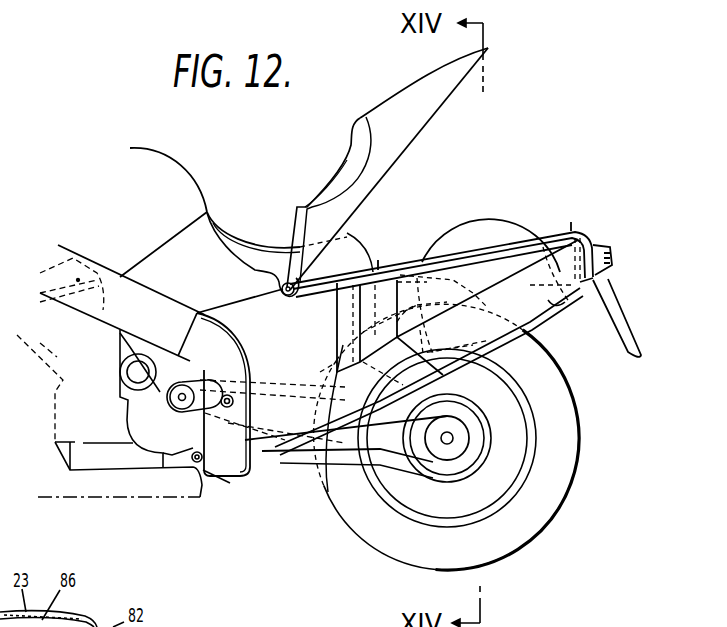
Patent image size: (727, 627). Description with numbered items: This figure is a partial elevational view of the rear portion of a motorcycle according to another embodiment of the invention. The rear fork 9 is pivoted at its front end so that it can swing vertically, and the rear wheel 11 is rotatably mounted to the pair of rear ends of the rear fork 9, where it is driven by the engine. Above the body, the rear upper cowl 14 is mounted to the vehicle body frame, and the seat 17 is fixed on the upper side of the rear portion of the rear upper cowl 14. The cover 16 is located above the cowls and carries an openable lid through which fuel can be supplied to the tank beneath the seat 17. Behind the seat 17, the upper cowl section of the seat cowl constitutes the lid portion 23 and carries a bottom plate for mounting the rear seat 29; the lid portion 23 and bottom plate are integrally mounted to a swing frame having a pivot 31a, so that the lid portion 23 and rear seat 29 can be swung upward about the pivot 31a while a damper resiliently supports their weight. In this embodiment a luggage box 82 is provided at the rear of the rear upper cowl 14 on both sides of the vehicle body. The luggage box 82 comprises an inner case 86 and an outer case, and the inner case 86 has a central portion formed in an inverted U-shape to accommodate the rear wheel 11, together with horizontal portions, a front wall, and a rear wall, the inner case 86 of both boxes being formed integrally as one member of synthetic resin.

The cover 16 is at (160, 148).
The seat 17 is at (255, 240).
The pivot 31a is at (287, 282).
The rear seat 29 is at (338, 177).
The lid portion 23 is at (420, 88).
The rear upper cowl 14 is at (280, 360).
The luggage box 82 is at (562, 302).
The rear fork 9 is at (394, 437).
The inner case 86 is at (326, 493).
The rear wheel 11 is at (581, 440).